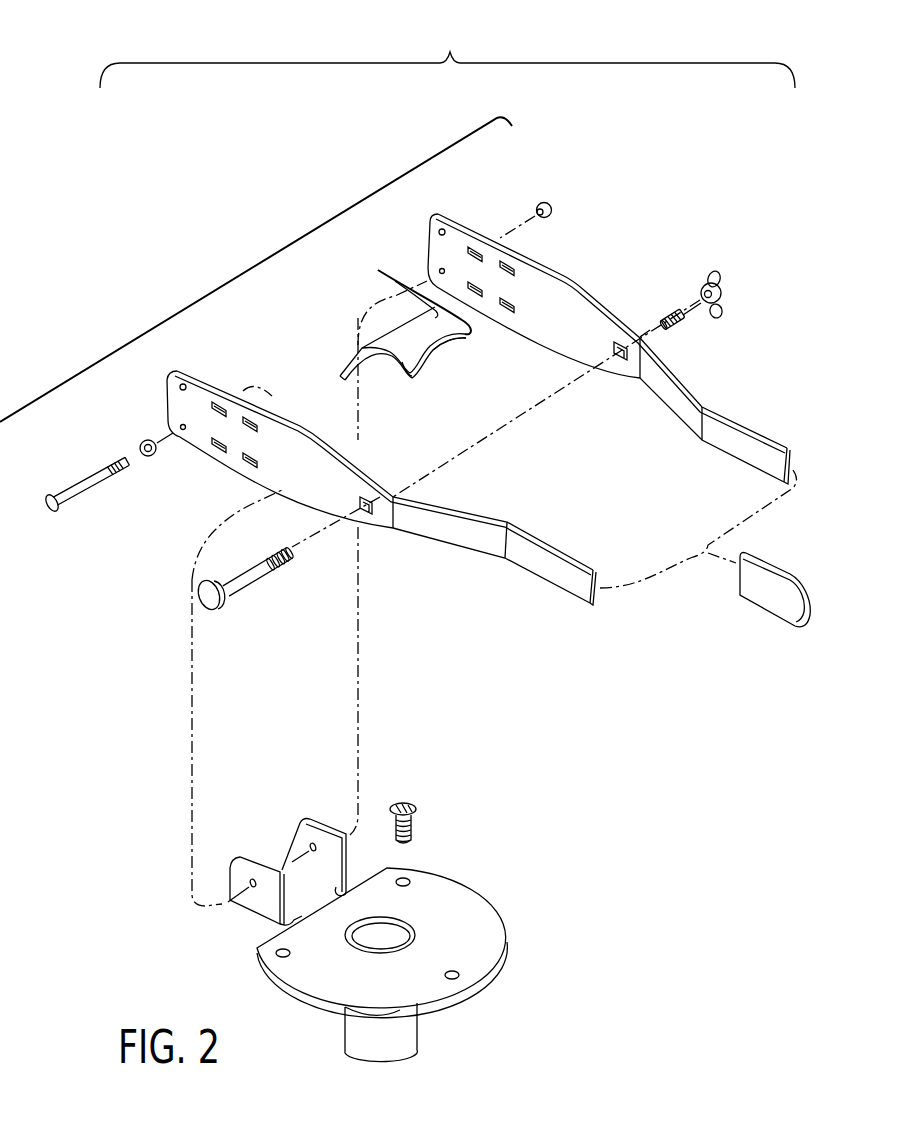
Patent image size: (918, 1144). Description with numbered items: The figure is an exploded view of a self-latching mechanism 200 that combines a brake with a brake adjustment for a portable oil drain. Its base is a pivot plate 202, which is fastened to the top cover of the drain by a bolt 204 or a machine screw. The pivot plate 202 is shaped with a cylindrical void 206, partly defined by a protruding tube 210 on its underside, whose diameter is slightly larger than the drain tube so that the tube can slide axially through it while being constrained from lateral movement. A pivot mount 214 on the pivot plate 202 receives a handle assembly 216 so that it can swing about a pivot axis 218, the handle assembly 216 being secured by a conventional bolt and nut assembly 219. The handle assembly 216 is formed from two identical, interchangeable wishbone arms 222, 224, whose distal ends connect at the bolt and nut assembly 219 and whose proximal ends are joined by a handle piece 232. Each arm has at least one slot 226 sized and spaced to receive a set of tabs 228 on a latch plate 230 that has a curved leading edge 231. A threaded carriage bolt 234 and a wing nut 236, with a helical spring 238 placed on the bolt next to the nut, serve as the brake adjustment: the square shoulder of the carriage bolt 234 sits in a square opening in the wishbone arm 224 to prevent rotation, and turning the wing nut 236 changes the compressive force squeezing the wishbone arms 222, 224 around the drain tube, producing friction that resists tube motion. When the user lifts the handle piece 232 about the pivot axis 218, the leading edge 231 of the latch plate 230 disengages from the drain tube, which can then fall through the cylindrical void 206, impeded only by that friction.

The self-latching mechanism 200 is at (447, 52).
The pivot plate 202 is at (498, 911).
The bolt 204 is at (417, 806).
The cylindrical void 206 is at (398, 932).
The protruding tube 210 is at (412, 1032).
The pivot mount 214 is at (350, 857).
The handle assembly 216 is at (250, 268).
The pivot axis 218 is at (282, 866).
The bolt and nut assembly 219 is at (547, 203).
The wishbone arm 222 is at (768, 433).
The wishbone arm 224 is at (552, 587).
The slot 226 is at (484, 283).
The tabs 228 is at (337, 372).
The latch plate 230 is at (413, 345).
The curved leading edge 231 is at (440, 351).
The handle piece 232 is at (782, 624).
The threaded carriage bolt 234 is at (219, 609).
The wing nut 236 is at (723, 301).
The helical spring 238 is at (684, 322).